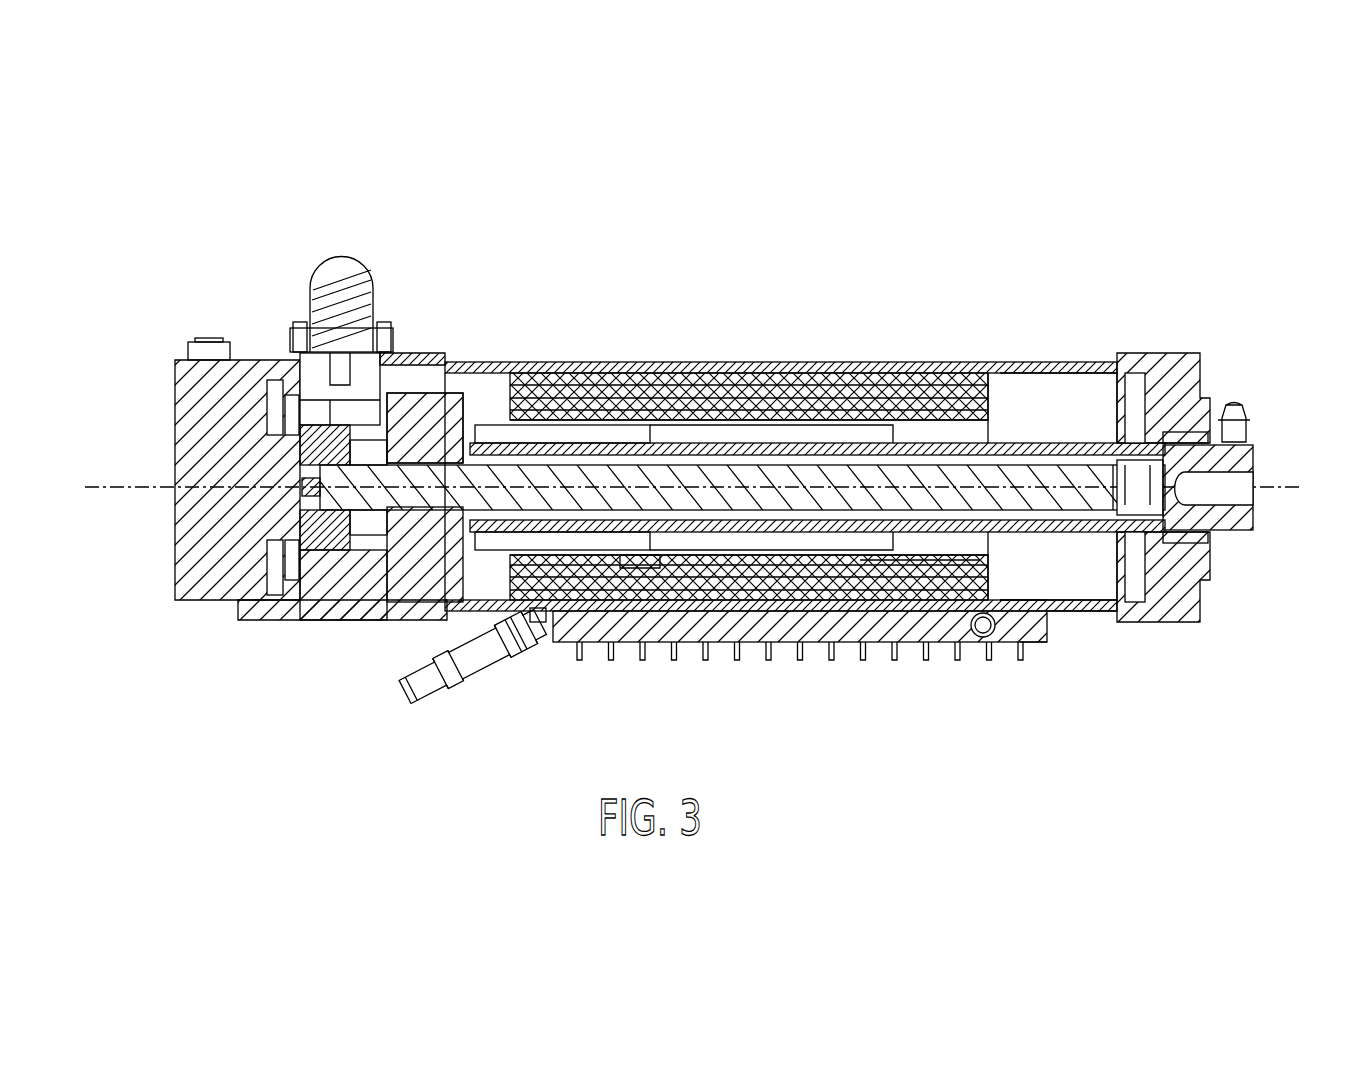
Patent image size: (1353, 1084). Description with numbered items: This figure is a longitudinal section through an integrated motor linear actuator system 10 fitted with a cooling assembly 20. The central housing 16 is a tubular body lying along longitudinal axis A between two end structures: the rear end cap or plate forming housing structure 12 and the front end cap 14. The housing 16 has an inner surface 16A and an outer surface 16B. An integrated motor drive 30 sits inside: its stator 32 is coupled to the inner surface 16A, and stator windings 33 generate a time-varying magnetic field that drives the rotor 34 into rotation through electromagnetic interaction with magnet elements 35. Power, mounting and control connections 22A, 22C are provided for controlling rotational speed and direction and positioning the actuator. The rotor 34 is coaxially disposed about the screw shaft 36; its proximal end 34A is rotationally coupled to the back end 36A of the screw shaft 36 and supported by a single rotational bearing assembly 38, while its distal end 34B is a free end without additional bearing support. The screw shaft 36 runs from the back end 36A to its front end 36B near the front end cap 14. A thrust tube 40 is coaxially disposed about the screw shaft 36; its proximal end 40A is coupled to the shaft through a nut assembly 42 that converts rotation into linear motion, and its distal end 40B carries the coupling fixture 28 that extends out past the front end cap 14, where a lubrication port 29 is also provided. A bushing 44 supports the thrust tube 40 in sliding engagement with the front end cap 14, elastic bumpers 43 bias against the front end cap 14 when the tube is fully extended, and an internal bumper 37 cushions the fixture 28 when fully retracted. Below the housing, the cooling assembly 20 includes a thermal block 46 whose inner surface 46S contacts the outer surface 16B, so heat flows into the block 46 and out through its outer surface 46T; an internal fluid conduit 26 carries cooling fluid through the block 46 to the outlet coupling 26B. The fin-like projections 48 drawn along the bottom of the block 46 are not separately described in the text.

The linear actuator system 10 is at (701, 481).
The housing structure 12 is at (360, 612).
The front end cap 14 is at (1178, 483).
The housing 16 is at (799, 487).
The inner surface 16A is at (1074, 597).
The outer surface 16B is at (1081, 623).
The cooling assembly 20 is at (775, 513).
The connection 22A is at (325, 300).
The connection 22C is at (211, 340).
The internal fluid conduit 26 is at (985, 640).
The outlet coupling 26B is at (430, 677).
The coupling fixture 28 is at (1222, 532).
The lubrication port 29 is at (1244, 412).
The integrated motor drive 30 is at (734, 414).
The stator 32 is at (888, 386).
The stator windings 33 is at (555, 398).
The rotor 34 is at (747, 413).
The proximal end of rotor 34A is at (400, 562).
The distal end of rotor 34B is at (890, 574).
The magnet elements 35 is at (802, 395).
The screw shaft 36 is at (685, 551).
The back end of screw shaft 36A is at (357, 515).
The front end of screw shaft 36B is at (1082, 485).
The internal bumper 37 is at (1134, 528).
The bearing assembly 38 is at (428, 425).
The thrust tube 40 is at (878, 460).
The proximal end of thrust tube 40A is at (612, 424).
The distal end of thrust tube 40B is at (1180, 562).
The nut assembly 42 is at (545, 582).
The bumpers 43 is at (640, 568).
The bushing 44 is at (1130, 430).
The thermal block 46 is at (835, 642).
The inner surface of block 46S is at (1004, 598).
The outer surface of block 46T is at (1036, 656).
The fins 48 is at (679, 662).